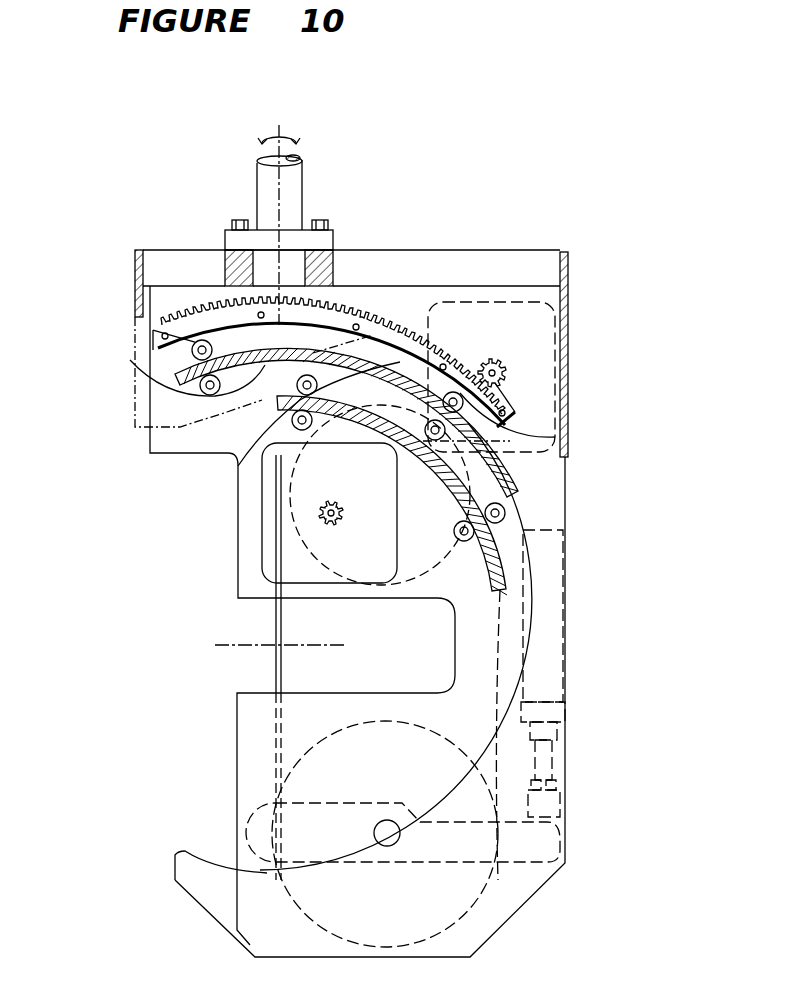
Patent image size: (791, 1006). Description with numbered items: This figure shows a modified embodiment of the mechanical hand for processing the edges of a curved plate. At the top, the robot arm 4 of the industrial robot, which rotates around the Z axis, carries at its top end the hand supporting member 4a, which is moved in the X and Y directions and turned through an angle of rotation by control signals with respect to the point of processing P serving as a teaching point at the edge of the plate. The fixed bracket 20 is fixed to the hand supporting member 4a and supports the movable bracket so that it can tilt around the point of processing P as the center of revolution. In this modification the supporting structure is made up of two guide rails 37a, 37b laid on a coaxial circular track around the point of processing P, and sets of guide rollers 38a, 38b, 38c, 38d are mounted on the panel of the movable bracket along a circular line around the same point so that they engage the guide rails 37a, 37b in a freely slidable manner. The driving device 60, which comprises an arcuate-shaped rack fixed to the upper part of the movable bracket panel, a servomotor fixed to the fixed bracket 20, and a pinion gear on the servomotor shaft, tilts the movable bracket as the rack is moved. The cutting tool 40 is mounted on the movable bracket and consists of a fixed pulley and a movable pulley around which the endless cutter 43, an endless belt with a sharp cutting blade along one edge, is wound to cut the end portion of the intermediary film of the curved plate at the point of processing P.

The robot arm 4 is at (292, 183).
The hand supporting member 4a is at (325, 237).
The fixed bracket 20 is at (568, 265).
The driving device 60 is at (528, 300).
The guide rollers 38c is at (200, 387).
The guide rollers 38d is at (470, 440).
The guide rail 37b is at (150, 428).
The guide rollers 38a is at (235, 463).
The guide rail 37a is at (330, 425).
The guide rollers 38b is at (478, 540).
The cutting tool 40 is at (250, 612).
The endless cutter 43 is at (283, 622).
The point of processing P is at (275, 648).